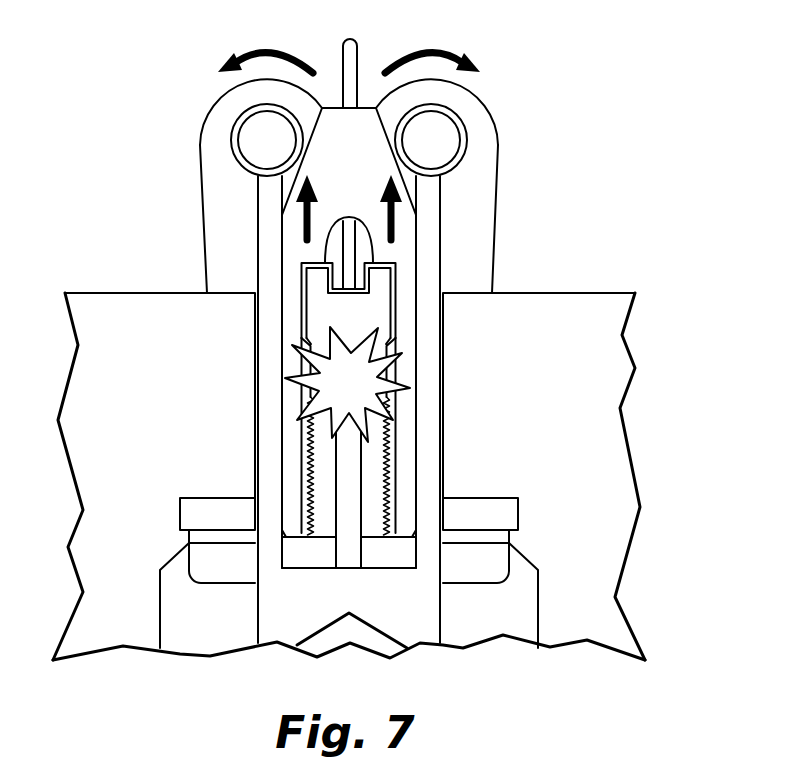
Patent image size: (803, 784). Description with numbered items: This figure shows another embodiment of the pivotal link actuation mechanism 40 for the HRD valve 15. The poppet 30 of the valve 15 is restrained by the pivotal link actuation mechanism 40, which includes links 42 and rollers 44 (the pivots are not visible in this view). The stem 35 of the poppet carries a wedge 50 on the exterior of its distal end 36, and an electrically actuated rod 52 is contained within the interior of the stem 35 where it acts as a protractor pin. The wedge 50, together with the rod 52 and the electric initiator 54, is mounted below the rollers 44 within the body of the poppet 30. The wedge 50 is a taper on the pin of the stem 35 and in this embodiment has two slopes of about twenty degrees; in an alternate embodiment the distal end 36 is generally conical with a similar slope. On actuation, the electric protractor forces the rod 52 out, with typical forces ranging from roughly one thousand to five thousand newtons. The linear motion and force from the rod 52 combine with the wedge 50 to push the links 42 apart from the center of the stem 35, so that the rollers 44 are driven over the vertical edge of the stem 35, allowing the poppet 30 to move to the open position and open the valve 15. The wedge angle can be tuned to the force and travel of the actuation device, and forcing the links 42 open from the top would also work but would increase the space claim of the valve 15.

The HRD valve 15 is at (613, 432).
The poppet 30 is at (215, 423).
The stem 35 is at (443, 273).
The distal end 36 is at (255, 272).
The pivotal link actuation mechanism 40 is at (162, 66).
The links 42 is at (498, 150).
The rollers 44 is at (443, 138).
The wedge 50 is at (383, 133).
The electrically actuated rod 52 is at (348, 497).
The electric initiator 54 is at (363, 375).